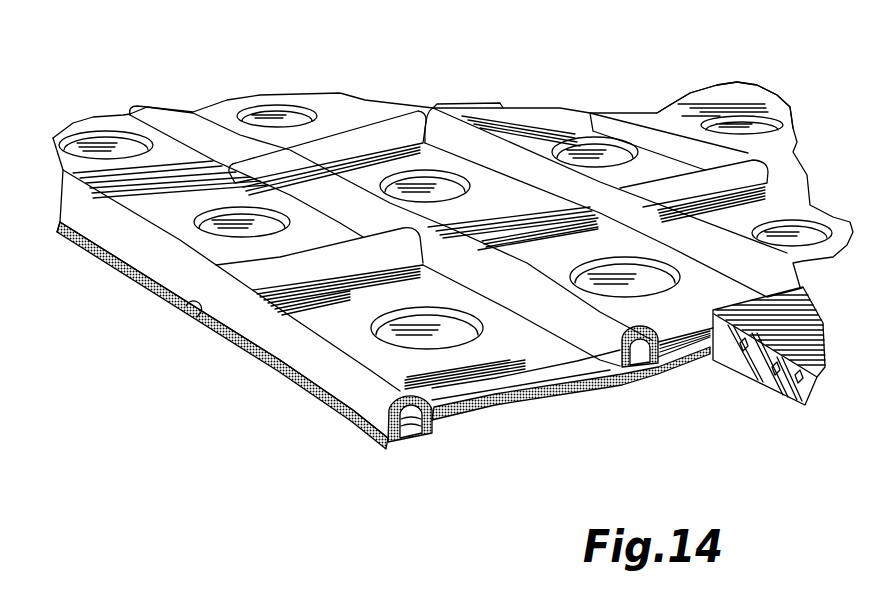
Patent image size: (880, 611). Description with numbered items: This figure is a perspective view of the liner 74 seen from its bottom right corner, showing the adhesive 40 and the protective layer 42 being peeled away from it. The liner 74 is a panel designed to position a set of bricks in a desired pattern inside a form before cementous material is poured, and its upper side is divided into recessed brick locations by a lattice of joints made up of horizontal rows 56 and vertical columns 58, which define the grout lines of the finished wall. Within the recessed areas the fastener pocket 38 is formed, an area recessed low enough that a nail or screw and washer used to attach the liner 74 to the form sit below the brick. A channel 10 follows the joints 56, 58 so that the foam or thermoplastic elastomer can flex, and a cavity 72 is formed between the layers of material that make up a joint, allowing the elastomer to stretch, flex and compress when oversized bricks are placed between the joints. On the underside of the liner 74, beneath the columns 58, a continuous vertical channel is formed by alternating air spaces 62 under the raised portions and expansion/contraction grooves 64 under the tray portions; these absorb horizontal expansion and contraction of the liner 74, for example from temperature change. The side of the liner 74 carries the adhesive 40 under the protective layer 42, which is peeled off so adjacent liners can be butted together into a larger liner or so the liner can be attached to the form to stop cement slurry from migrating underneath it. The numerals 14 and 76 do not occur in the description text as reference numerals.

The channel 10 is at (587, 390).
The panel rib segment 14 is at (510, 230).
The fastener pocket 38 is at (740, 130).
The adhesive 40 is at (310, 397).
The protective layer 42 is at (750, 373).
The horizontal rows 56 is at (148, 228).
The vertical columns 58 is at (332, 260).
The air spaces 62 is at (447, 454).
The grooves 64 is at (195, 318).
The cavity 72 is at (424, 435).
The liner 74 is at (450, 101).
The rib end channel 76 is at (637, 368).